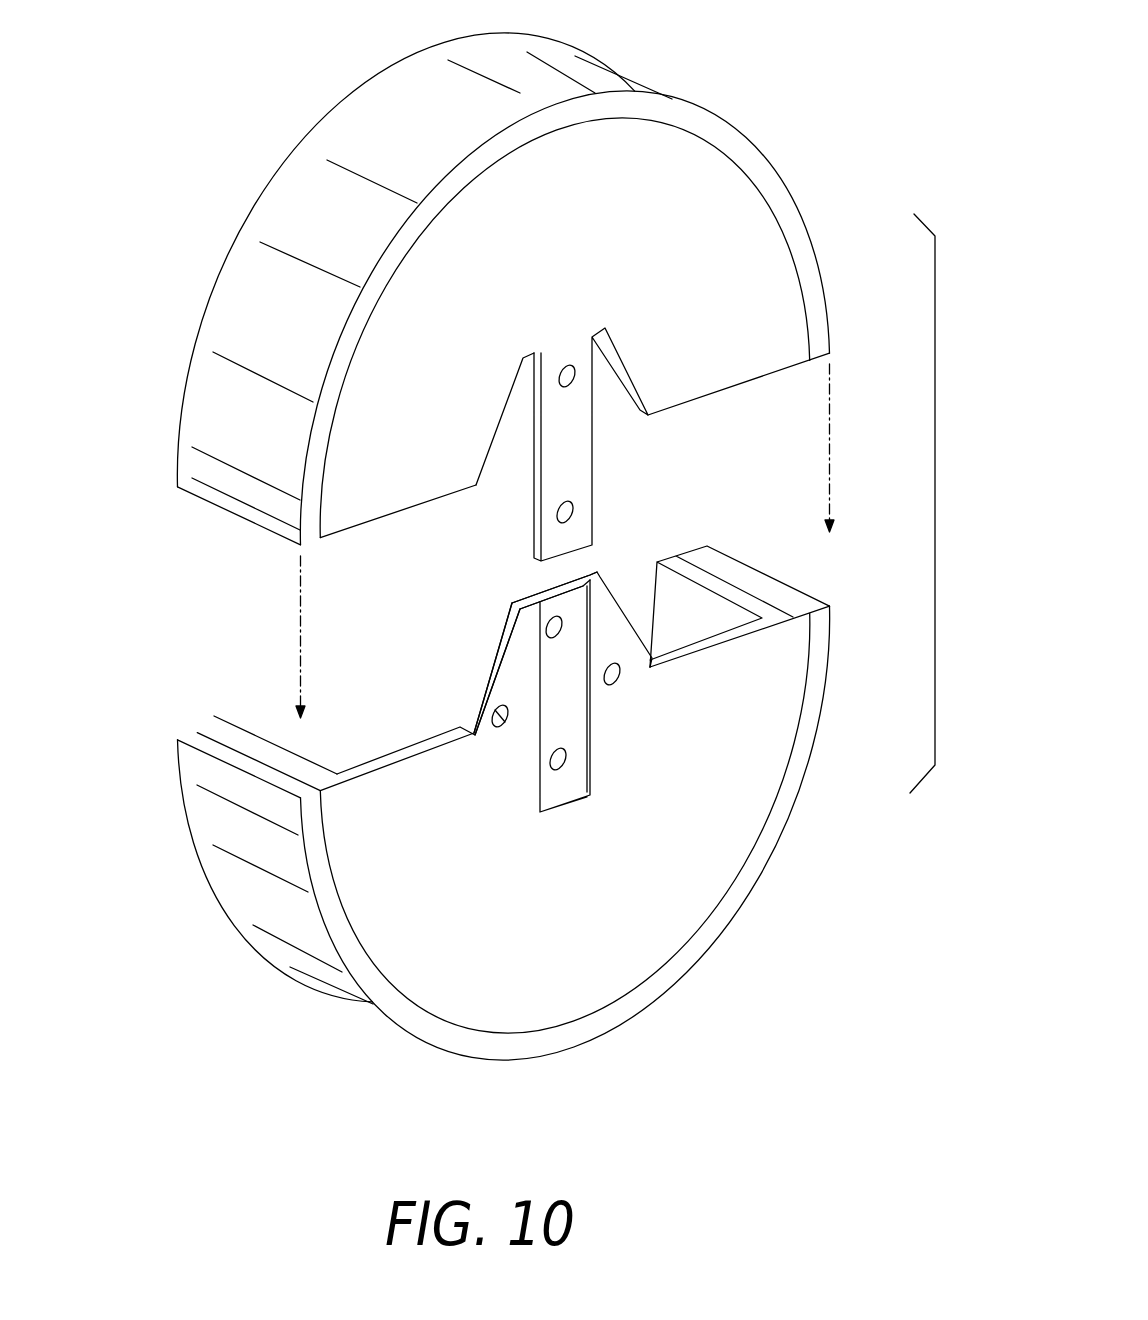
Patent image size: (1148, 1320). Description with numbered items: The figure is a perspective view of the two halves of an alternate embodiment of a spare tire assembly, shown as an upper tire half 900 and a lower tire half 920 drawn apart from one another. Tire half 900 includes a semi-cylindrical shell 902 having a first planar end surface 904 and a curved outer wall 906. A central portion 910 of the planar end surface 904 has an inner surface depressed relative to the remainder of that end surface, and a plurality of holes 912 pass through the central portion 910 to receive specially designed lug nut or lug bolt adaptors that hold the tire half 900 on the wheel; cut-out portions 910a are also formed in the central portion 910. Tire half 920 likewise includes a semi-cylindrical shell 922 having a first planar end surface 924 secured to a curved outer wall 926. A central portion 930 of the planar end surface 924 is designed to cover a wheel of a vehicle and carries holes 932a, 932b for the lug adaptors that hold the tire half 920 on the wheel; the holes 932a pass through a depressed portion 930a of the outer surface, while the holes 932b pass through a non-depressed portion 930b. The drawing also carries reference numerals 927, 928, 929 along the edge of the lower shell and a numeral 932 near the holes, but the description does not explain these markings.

The tire half 900 is at (845, 346).
The semi-cylindrical shell 902 is at (755, 183).
The first planar end surface 904 is at (760, 360).
The curved outer wall 906 is at (275, 195).
The central portion 910 is at (593, 453).
The cut-out portions 910a is at (497, 413).
The holes 912 is at (562, 500).
The tire half 920 is at (834, 578).
The semi-cylindrical shell 922 is at (690, 640).
The first planar end surface 924 is at (720, 830).
The curved outer wall 926 is at (278, 953).
The outer layer 927 is at (207, 722).
The middle layer 928 is at (201, 724).
The inner layer 929 is at (183, 732).
The central portion 930 is at (509, 674).
The depressed portion 930a is at (560, 710).
The non-depressed portion 930b is at (605, 582).
The hole 932 is at (527, 593).
The holes 932a is at (567, 751).
The holes 932b is at (505, 723).